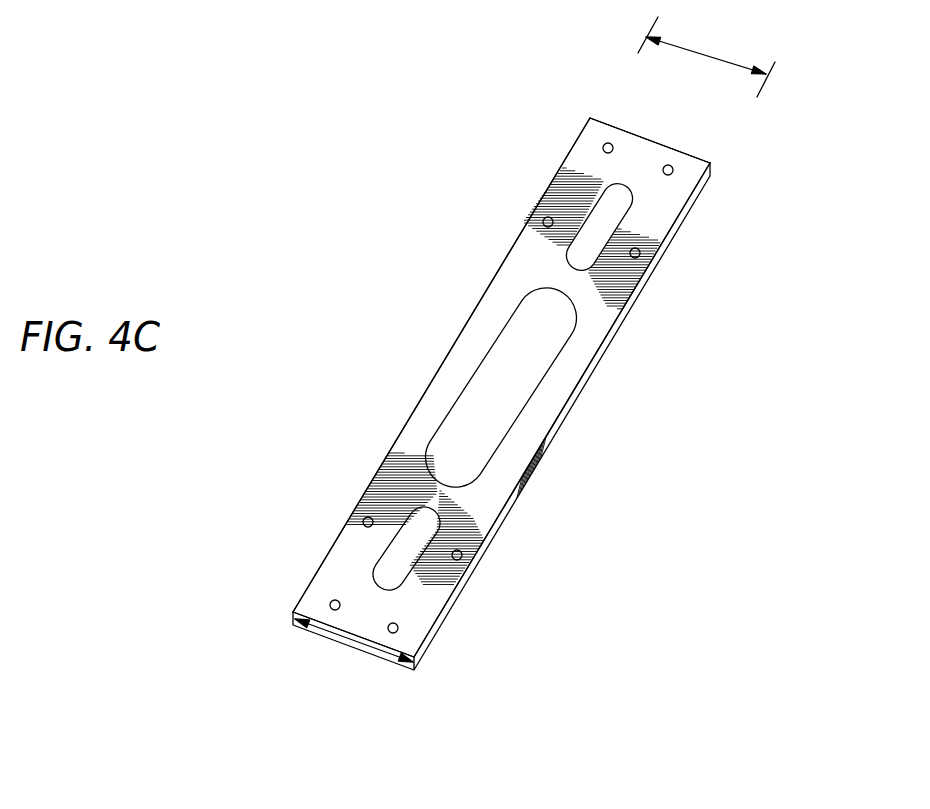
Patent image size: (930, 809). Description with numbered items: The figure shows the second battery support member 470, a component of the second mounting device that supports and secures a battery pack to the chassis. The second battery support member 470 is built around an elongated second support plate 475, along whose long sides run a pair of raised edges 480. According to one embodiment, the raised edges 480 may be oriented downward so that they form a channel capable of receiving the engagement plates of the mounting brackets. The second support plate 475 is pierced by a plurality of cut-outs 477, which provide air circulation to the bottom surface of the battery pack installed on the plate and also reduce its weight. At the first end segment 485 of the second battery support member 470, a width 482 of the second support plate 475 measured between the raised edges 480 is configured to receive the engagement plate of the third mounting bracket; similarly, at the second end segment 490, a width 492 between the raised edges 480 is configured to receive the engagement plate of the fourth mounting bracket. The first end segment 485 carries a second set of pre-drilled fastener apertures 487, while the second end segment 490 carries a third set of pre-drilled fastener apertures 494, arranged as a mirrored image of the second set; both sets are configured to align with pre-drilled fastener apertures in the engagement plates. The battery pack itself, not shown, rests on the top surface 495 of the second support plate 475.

The second battery support member 470 is at (488, 260).
The second support plate 475 is at (573, 165).
The cut-outs 477 is at (422, 520).
The raised edges 480 is at (590, 118).
The width 482 is at (708, 56).
The first end segment 485 is at (692, 192).
The second set of pre-drilled fastener apertures 487 is at (553, 220).
The second end segment 490 is at (417, 618).
The width 492 is at (351, 641).
The third set of pre-drilled fastener apertures 494 is at (452, 552).
The top surface 495 is at (432, 404).